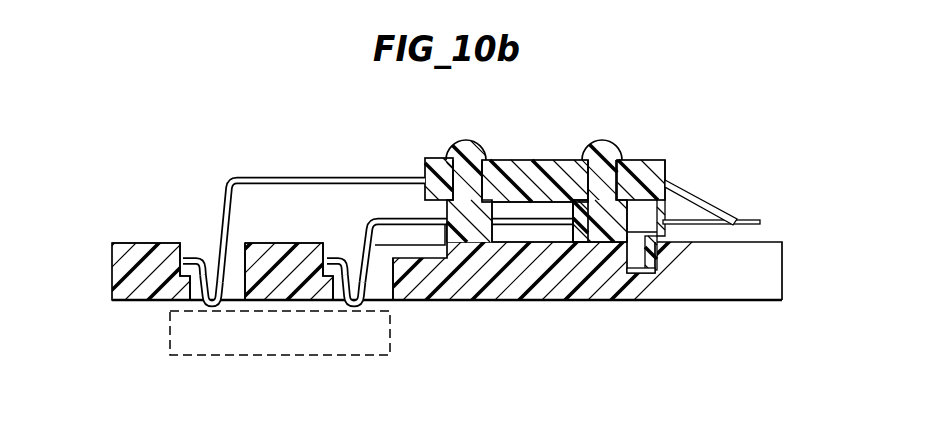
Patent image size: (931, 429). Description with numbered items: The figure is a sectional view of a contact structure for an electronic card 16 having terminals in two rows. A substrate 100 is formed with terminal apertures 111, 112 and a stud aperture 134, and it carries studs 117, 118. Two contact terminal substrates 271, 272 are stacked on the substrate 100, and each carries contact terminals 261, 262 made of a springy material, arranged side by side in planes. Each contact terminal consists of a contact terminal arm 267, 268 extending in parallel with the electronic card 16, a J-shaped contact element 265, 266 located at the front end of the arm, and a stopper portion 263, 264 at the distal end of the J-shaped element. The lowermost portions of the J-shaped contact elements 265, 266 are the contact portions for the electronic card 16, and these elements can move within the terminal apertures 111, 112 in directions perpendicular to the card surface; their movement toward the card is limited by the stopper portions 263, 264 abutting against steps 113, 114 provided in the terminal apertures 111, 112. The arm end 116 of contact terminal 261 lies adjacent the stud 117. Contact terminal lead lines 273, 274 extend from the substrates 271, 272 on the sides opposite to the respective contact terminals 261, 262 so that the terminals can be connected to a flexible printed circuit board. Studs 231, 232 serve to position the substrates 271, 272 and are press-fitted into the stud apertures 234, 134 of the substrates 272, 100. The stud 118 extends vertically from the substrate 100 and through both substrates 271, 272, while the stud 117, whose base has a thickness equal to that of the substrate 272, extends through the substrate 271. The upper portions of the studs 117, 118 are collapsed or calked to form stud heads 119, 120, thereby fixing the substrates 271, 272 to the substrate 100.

The electronic card 16 is at (187, 355).
The substrate 100 is at (456, 326).
The terminal aperture 111 is at (207, 247).
The terminal aperture 112 is at (335, 216).
The step 113 is at (153, 247).
The step 114 is at (256, 216).
The contact end 116 is at (392, 178).
The stud 117 is at (442, 167).
The stud 118 is at (640, 167).
The stud head 119 is at (467, 142).
The stud head 120 is at (613, 158).
The stud aperture 134 is at (645, 277).
The stud 231 is at (607, 178).
The stud 232 is at (640, 262).
The stud aperture 234 is at (617, 247).
The contact terminal 261 is at (264, 224).
The contact terminal 262 is at (425, 291).
The stopper portion 263 is at (186, 252).
The stopper portion 264 is at (330, 250).
The J-shaped contact element 265 is at (207, 312).
The J-shaped contact element 266 is at (355, 336).
The contact terminal arm 267 is at (297, 177).
The contact terminal arm 268 is at (375, 178).
The contact terminal substrate 271 is at (517, 165).
The contact terminal substrate 272 is at (572, 195).
The contact terminal lead line 273 is at (693, 190).
The contact terminal lead line 274 is at (705, 215).